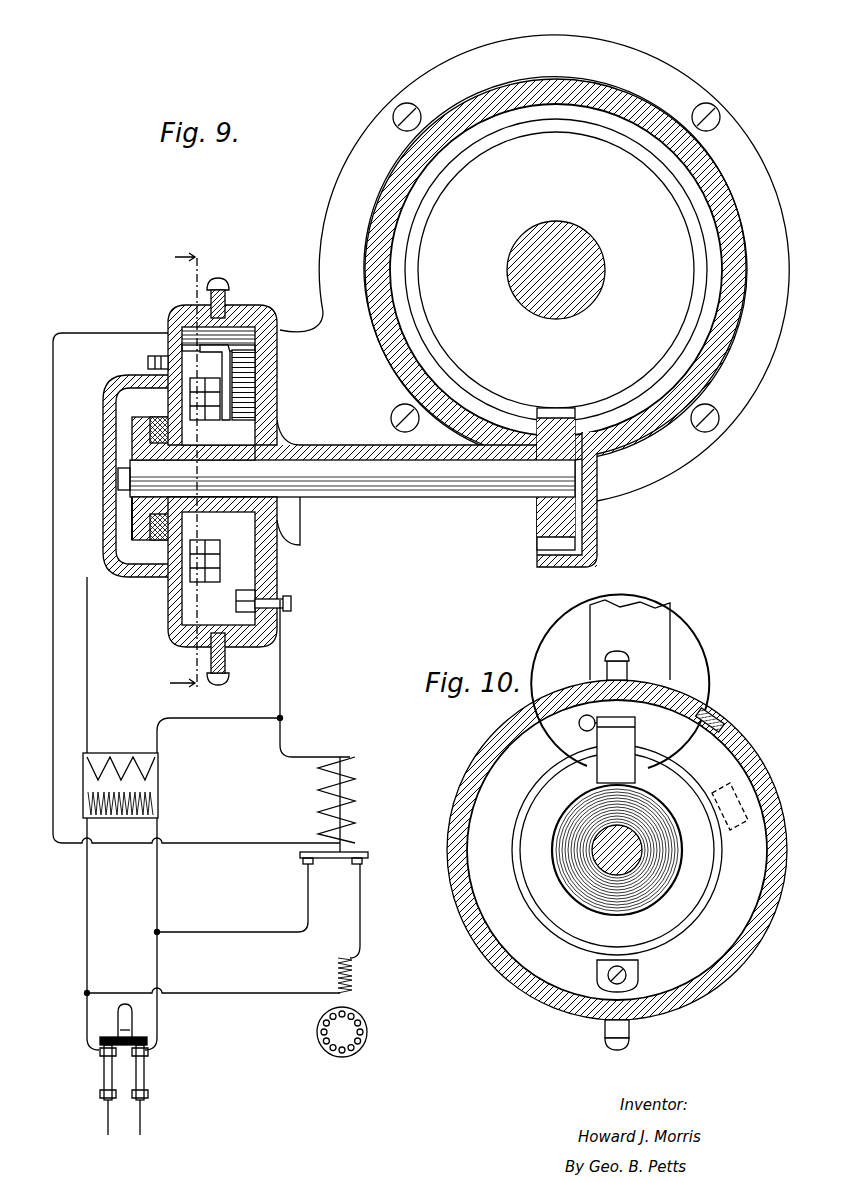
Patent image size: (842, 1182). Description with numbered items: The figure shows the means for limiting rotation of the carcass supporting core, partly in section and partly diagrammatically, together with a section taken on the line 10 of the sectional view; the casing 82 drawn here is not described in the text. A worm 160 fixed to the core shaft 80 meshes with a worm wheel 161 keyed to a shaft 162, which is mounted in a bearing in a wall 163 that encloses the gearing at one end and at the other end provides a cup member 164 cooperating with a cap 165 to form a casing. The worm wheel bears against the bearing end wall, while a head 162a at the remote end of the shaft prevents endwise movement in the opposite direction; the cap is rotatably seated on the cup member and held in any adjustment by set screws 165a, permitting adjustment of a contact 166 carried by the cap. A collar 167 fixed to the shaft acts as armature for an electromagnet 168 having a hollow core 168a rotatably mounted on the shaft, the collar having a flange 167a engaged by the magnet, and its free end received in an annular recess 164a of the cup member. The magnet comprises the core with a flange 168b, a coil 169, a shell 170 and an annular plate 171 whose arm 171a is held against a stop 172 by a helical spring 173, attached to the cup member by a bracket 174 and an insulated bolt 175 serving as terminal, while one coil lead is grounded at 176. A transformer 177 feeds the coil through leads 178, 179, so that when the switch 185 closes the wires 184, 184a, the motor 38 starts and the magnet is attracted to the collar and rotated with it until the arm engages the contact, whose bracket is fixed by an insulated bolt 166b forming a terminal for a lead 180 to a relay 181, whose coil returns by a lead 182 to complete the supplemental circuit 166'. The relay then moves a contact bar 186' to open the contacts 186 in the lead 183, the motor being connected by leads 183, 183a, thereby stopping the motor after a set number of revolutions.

In FIG. 9, the section line 10 is at (188, 470).
In FIG. 9, the motor 38 is at (348, 1027).
In FIG. 9, the core shaft 80 is at (556, 280).
In FIG. 9, the casing 82 is at (172, 312).
In FIG. 10, the casing 82 is at (617, 850).
In FIG. 9, the worm 160 is at (668, 332).
In FIG. 9, the worm wheel 161 is at (556, 560).
In FIG. 9, the shaft 162 is at (445, 497).
In FIG. 10, the shaft 162 is at (625, 860).
In FIG. 9, the head 162a is at (120, 473).
In FIG. 9, the wall 163 is at (312, 300).
In FIG. 9, the cup member 164 is at (268, 645).
In FIG. 9, the annular recess 164a is at (282, 520).
In FIG. 9, the cap 165 is at (148, 582).
In FIG. 9, the set screw 165a is at (240, 272).
In FIG. 10, the set screw 165a is at (623, 656).
In FIG. 9, the contact 166 is at (190, 330).
In FIG. 10, the contact 166 is at (721, 769).
In FIG. 9, the bolt 166b is at (148, 362).
In FIG. 9, the supplemental electric circuit 166' is at (241, 830).
In FIG. 9, the collar 167 is at (305, 440).
In FIG. 9, the flange 167a is at (282, 548).
In FIG. 9, the electromagnet 168 is at (133, 437).
In FIG. 9, the hollow core 168a is at (122, 450).
In FIG. 10, the hollow core 168a is at (640, 880).
In FIG. 9, the flange 168b is at (178, 532).
In FIG. 9, the coil 169 is at (182, 578).
In FIG. 10, the coil 169 is at (655, 900).
In FIG. 9, the shell 170 is at (120, 572).
In FIG. 10, the shell 170 is at (660, 885).
In FIG. 9, the annular plate 171 is at (260, 425).
In FIG. 9, the arm 171a is at (230, 382).
In FIG. 10, the arm 171a is at (636, 745).
In FIG. 9, the stop 172 is at (250, 314).
In FIG. 10, the stop 172 is at (580, 723).
In FIG. 9, the spring 173 is at (190, 396).
In FIG. 10, the spring 173 is at (530, 850).
In FIG. 9, the bracket 174 is at (236, 596).
In FIG. 10, the bracket 174 is at (640, 970).
In FIG. 9, the bolt 175 is at (292, 603).
In FIG. 10, the bolt 175 is at (606, 975).
In FIG. 9, the ground 176 is at (130, 508).
In FIG. 9, the transformer 177 is at (158, 800).
In FIG. 9, the lead 178 is at (88, 720).
In FIG. 9, the lead 179 is at (283, 712).
In FIG. 9, the lead 180 is at (53, 700).
In FIG. 9, the relay 181 is at (354, 804).
In FIG. 9, the lead 182 is at (310, 757).
In FIG. 9, the lead 183 is at (240, 933).
In FIG. 9, the lead 183a is at (270, 993).
In FIG. 9, the wire 184 is at (84, 928).
In FIG. 9, the wire 184a is at (156, 966).
In FIG. 9, the switch 185 is at (146, 1078).
In FIG. 9, the contacts 186 is at (281, 905).
In FIG. 9, the contact bar 186' is at (334, 878).